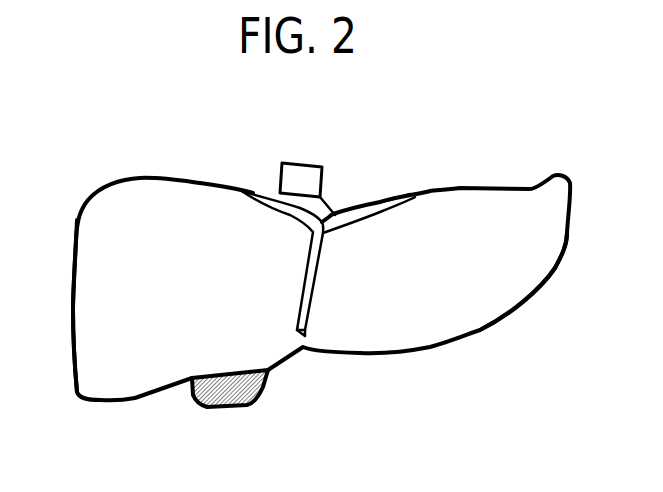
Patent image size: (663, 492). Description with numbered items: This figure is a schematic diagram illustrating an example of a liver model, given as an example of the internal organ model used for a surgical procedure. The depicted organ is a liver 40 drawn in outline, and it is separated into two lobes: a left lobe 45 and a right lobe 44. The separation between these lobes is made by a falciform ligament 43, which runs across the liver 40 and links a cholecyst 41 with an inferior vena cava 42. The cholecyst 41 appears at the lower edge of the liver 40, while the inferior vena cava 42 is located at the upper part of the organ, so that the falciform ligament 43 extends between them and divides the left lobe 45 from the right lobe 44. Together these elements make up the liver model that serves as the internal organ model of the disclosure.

The liver 40 is at (206, 134).
The cholecyst 41 is at (228, 397).
The inferior vena cava 42 is at (323, 181).
The falciform ligament 43 is at (313, 297).
The right lobe 44 is at (97, 337).
The left lobe 45 is at (478, 312).